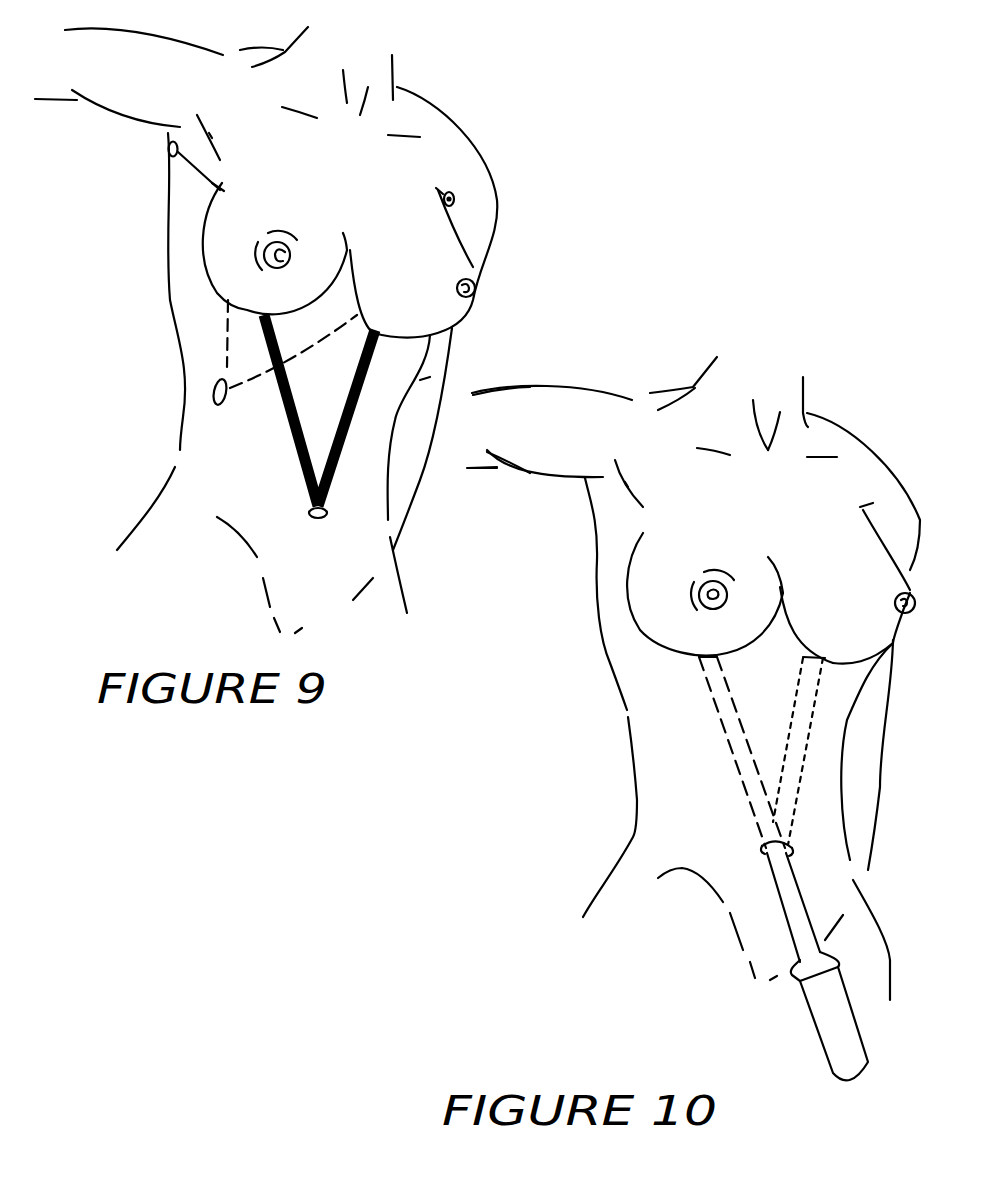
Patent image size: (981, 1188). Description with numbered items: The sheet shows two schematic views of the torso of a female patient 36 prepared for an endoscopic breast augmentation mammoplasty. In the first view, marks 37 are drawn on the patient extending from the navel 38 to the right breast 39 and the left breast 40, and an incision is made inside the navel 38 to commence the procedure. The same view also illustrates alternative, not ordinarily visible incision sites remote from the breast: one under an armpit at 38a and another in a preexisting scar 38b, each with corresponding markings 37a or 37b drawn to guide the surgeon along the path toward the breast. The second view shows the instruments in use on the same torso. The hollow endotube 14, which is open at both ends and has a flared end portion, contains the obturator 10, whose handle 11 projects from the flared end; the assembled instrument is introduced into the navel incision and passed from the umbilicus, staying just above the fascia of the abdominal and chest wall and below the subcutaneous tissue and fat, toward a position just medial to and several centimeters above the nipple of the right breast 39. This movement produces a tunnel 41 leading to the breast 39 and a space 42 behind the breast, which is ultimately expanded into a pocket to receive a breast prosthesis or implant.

In FIG. 10, the obturator 10 is at (795, 868).
In FIG. 10, the handle 11 is at (850, 1042).
In FIG. 10, the endotube 14 is at (788, 908).
In FIG. 9, the female patient 36 is at (307, 340).
In FIG. 9, the marks 37 is at (288, 420).
In FIG. 9, the markings 37a is at (197, 176).
In FIG. 9, the markings 37b is at (226, 338).
In FIG. 9, the navel 38 is at (330, 513).
In FIG. 10, the navel 38 is at (760, 849).
In FIG. 9, the armpit incision location 38a is at (169, 150).
In FIG. 9, the preexisting scar 38b is at (214, 397).
In FIG. 9, the right breast 39 is at (222, 258).
In FIG. 10, the right breast 39 is at (662, 602).
In FIG. 9, the left breast 40 is at (447, 263).
In FIG. 10, the tunnel 41 is at (723, 737).
In FIG. 10, the space 42 is at (663, 627).